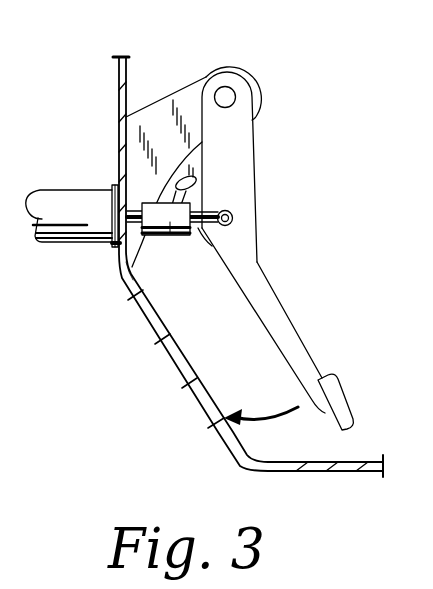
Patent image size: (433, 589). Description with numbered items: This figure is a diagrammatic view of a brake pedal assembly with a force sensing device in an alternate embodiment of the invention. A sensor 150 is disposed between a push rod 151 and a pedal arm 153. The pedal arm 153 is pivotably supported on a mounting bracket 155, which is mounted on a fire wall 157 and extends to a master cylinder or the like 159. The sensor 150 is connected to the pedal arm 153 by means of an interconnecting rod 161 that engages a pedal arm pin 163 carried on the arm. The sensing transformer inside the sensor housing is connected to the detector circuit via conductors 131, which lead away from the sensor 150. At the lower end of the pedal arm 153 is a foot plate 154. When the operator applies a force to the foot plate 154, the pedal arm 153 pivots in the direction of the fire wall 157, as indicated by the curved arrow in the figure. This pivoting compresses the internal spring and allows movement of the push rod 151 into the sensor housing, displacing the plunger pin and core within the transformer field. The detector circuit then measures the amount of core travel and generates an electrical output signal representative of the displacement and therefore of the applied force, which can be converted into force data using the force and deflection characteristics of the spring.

The fire wall 157 is at (127, 70).
The master cylinder 159 is at (75, 192).
The mounting bracket 155 is at (255, 75).
The conductors 131 is at (197, 181).
The sensor 150 is at (176, 237).
The pedal arm pin 163 is at (233, 219).
The interconnecting rod 161 is at (214, 247).
The push rod 151 is at (140, 262).
The pedal arm 153 is at (292, 318).
The foot plate 154 is at (343, 408).